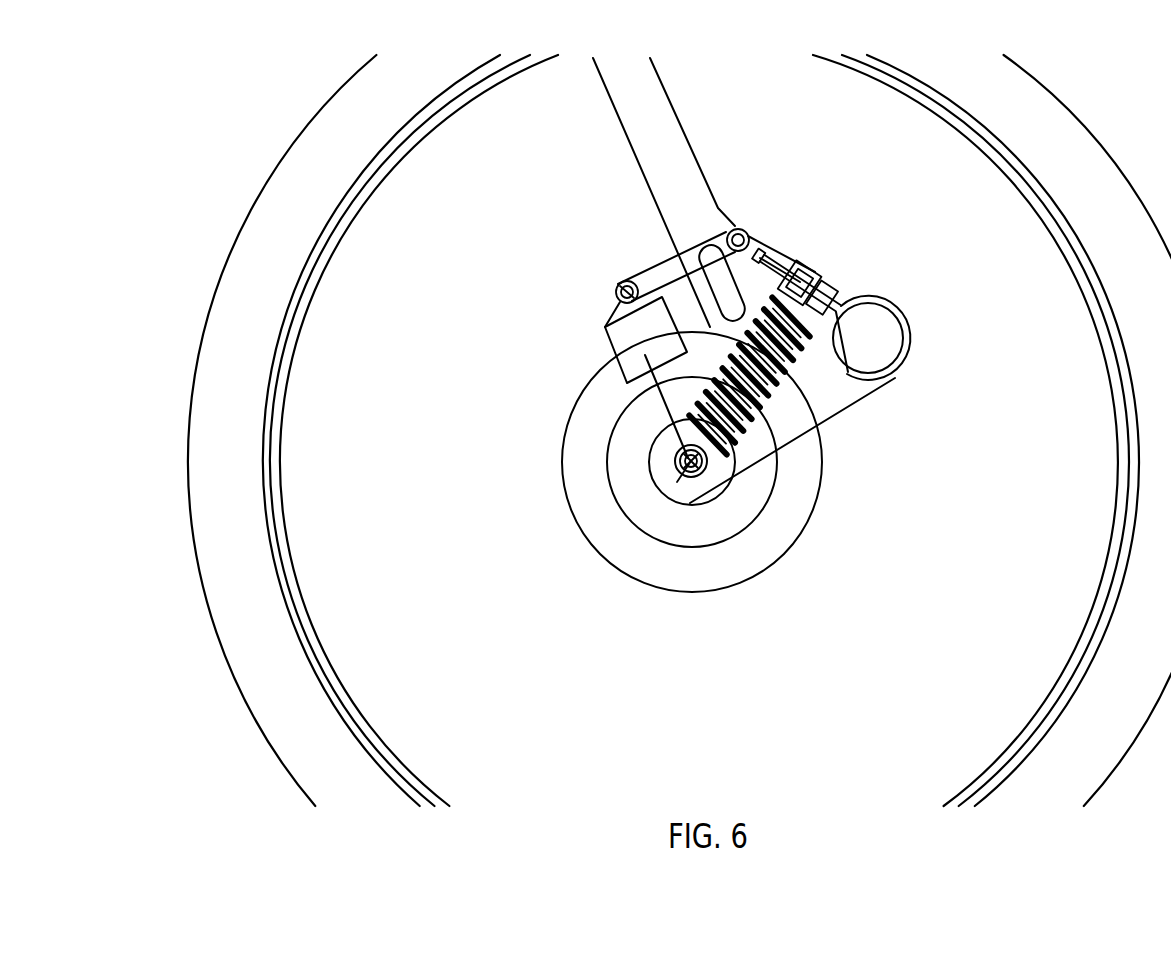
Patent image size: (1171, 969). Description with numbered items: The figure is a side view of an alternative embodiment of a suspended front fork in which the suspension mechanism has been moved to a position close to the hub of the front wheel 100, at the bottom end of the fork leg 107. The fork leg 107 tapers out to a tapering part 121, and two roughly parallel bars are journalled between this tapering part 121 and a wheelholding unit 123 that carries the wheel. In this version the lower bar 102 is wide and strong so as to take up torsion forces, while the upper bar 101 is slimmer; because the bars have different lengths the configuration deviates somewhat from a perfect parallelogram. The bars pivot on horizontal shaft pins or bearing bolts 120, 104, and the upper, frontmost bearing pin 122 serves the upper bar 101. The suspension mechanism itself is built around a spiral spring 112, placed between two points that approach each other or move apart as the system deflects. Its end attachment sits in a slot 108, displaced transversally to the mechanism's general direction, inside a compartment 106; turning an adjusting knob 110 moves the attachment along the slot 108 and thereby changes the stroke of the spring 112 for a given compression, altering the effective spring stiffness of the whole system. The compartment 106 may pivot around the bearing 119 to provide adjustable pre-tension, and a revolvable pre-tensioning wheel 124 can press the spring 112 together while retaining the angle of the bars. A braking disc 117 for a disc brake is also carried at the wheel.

The front wheel 100 is at (1122, 636).
The upper bar 101 is at (665, 277).
The lower bar 102 is at (825, 402).
The horizontal shaft pin 104 is at (703, 468).
The compartment 106 is at (840, 273).
The fork leg 107 is at (668, 128).
The slot 108 is at (841, 288).
The adjusting knob 110 is at (765, 257).
The spiral spring 112 is at (686, 428).
The braking disc 117 is at (593, 548).
The bearing 119 is at (875, 345).
The horizontal shaft pin 120 is at (615, 285).
The tapering part 121 is at (752, 245).
The bearing pin 122 is at (746, 228).
The wheelholding unit 123 is at (667, 400).
The pre-tensioning wheel 124 is at (836, 348).